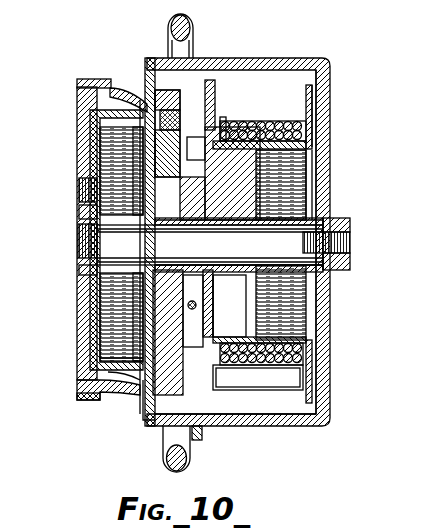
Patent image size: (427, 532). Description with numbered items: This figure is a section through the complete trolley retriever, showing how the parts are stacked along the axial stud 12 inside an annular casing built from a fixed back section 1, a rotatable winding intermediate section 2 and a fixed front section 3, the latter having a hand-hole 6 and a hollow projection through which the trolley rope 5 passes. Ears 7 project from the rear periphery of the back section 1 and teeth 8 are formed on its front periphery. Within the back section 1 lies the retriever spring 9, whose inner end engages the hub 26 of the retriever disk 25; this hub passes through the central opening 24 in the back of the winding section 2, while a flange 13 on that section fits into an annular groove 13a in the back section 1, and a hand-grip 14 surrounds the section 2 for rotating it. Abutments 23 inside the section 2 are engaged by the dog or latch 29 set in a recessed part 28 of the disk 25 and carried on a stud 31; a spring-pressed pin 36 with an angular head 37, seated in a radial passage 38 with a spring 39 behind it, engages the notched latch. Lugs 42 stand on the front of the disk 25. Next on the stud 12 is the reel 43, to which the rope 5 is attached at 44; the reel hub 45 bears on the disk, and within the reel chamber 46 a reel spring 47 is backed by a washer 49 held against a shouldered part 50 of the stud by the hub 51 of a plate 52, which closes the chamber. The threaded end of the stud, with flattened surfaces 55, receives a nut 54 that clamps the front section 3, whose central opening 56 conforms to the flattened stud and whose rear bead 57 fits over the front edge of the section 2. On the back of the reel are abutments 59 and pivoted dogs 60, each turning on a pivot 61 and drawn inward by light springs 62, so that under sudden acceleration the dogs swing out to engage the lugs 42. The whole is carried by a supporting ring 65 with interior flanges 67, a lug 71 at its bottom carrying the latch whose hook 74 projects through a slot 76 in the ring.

The back section 1 is at (92, 118).
The intermediate section 2 is at (144, 412).
The front section 3 is at (331, 84).
The trolley rope 5 is at (270, 128).
The hand-hole 6 is at (300, 386).
The ears 7 is at (90, 400).
The teeth 8 is at (132, 100).
The retriever spring 9 is at (88, 325).
The axial stud 12 is at (206, 261).
The flange 13 is at (141, 100).
The annular groove 13a is at (133, 388).
The hand-grip 14 is at (170, 24).
The abutments 23 is at (170, 440).
The central opening 24 is at (80, 181).
The retriever disk 25 is at (100, 302).
The hub 26 is at (80, 268).
The recessed part 28 is at (180, 118).
The latch 29 is at (165, 96).
The stud 31 is at (208, 104).
The pin or plunger 36 is at (100, 166).
The angular head 37 is at (100, 148).
The radial passage 38 is at (154, 241).
The spring 39 is at (188, 241).
The lugs 42 is at (228, 428).
The reel 43 is at (313, 114).
The rope attachment 44 is at (248, 130).
The reel hub 45 is at (225, 306).
The chamber 46 is at (213, 316).
The reel spring 47 is at (300, 182).
The washer 49 is at (300, 312).
The shouldered part 50 is at (214, 241).
The hub 51 is at (314, 212).
The plate 52 is at (314, 342).
The nut 54 is at (346, 268).
The flattened surfaces 55 is at (352, 244).
The opening 56 is at (355, 236).
The bead 57 is at (198, 440).
The abutments 59 is at (222, 392).
The dogs 60 is at (226, 118).
The pivot 61 is at (312, 146).
The light springs 62 is at (100, 356).
The supporting ring 65 is at (89, 78).
The interior flanges 67 is at (80, 100).
The lug 71 is at (203, 29).
The hook 74 is at (80, 240).
The slot 76 is at (80, 208).